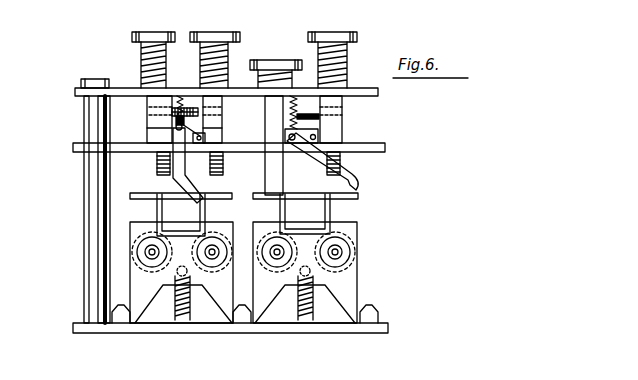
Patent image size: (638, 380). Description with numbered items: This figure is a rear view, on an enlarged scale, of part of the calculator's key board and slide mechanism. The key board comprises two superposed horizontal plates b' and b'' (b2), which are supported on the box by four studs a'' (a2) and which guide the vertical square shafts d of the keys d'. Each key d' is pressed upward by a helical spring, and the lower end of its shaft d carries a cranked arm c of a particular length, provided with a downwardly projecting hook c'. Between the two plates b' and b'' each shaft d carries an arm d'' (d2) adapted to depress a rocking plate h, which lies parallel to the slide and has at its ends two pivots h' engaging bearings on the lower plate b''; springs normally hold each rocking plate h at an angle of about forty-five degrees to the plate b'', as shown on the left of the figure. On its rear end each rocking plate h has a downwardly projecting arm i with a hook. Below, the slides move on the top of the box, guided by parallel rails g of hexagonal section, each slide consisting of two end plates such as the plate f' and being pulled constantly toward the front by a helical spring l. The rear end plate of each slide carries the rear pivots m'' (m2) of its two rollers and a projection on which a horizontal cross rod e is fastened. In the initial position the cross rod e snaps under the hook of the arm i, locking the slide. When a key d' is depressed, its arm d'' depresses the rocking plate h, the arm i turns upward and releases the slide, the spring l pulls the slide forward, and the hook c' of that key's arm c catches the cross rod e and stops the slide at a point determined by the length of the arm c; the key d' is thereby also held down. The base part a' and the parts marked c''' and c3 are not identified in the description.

The base plate a' is at (230, 341).
The studs a'' is at (81, 201).
The studs a2 is at (81, 201).
The upper horizontal plate b' is at (213, 93).
The lower horizontal plate b'' is at (215, 143).
The lower horizontal plate b2 is at (215, 143).
The keys d' is at (244, 49).
The vertical square shafts d is at (246, 145).
The arm d'' is at (208, 112).
The arm d2 is at (208, 112).
The rocking plate h is at (209, 117).
The pivots h' is at (245, 108).
The threaded rod c''' is at (332, 112).
The threaded rod c3 is at (332, 112).
The downwardly projecting arm i is at (186, 176).
The hooks c' is at (229, 194).
The cranked arms c is at (275, 163).
The cross rod e is at (142, 199).
The end plate f' is at (258, 272).
The rear pivots m'' is at (266, 252).
The rear pivots m2 is at (266, 252).
The helical springs l is at (174, 302).
The parallel rails g is at (380, 320).